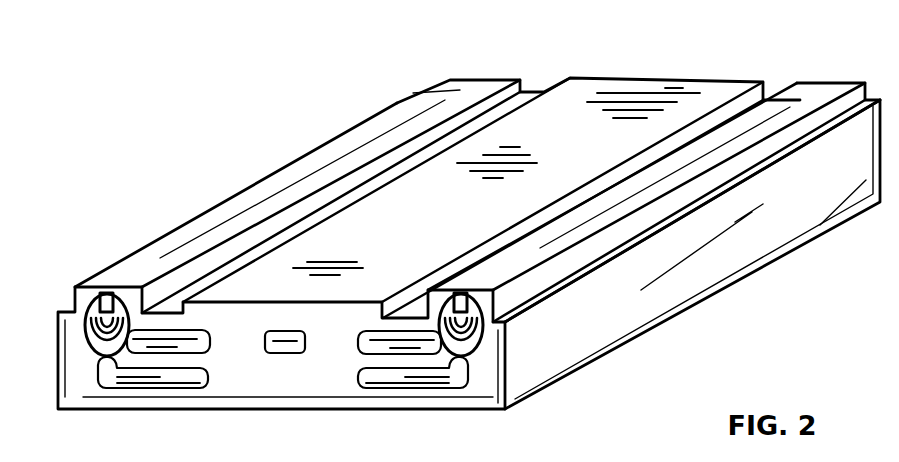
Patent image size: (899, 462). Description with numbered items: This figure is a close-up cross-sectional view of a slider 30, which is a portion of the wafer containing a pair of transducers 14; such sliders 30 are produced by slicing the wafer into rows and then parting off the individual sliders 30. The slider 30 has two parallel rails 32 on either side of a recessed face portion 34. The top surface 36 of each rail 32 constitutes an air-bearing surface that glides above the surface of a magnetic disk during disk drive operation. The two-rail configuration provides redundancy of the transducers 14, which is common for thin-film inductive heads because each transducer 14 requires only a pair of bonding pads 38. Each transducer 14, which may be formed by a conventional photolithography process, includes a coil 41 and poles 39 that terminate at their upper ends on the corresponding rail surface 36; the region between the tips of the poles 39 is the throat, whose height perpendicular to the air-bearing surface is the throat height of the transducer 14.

The slider 30 is at (664, 42).
The rail 32 is at (266, 177).
The recessed face portion 34 is at (713, 82).
The top surface of rail 36 is at (390, 113).
The bonding pads 38 is at (207, 383).
The poles 39 is at (103, 297).
The coil 41 is at (84, 334).
The transducer 14 is at (346, 420).